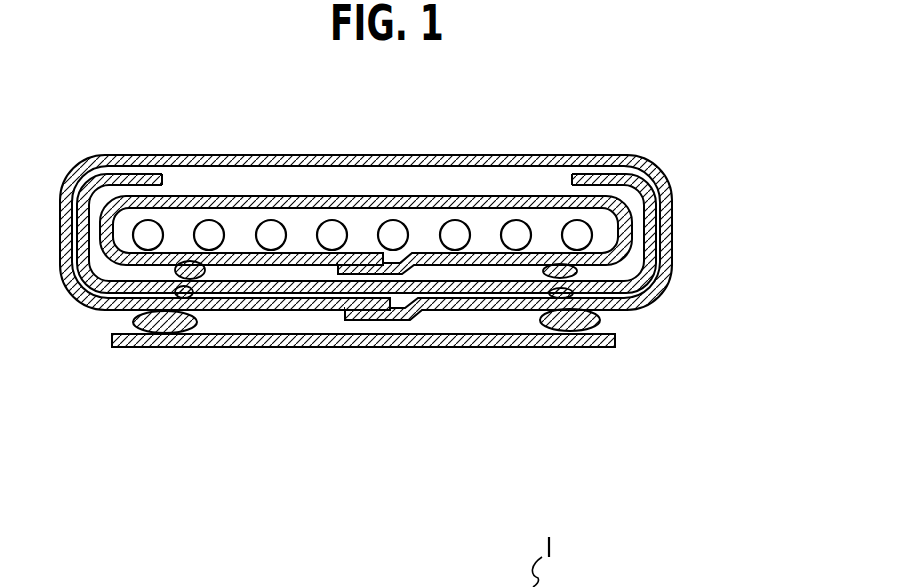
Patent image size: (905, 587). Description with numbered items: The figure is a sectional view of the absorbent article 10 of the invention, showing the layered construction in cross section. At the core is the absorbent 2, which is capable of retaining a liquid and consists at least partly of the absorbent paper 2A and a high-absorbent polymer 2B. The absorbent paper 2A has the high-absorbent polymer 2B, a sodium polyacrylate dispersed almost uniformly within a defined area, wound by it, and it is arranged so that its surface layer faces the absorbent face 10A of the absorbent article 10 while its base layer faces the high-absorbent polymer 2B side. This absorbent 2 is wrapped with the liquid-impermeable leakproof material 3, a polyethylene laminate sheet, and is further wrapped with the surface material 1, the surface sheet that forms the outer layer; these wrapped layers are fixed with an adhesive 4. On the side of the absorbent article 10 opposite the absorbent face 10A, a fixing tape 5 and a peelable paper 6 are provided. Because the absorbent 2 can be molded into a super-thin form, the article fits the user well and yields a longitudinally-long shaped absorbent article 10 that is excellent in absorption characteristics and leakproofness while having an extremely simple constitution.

The surface material 1 is at (600, 153).
The absorbent 2 is at (807, 190).
The absorbent paper 2A is at (592, 230).
The high-absorbent polymer 2B is at (586, 247).
The leakproof material 3 is at (643, 167).
The adhesive 4 is at (213, 278).
The fixing tape 5 is at (600, 321).
The peelable paper 6 is at (570, 348).
The absorbent article 10 is at (443, 153).
The absorbent face 10A is at (378, 157).